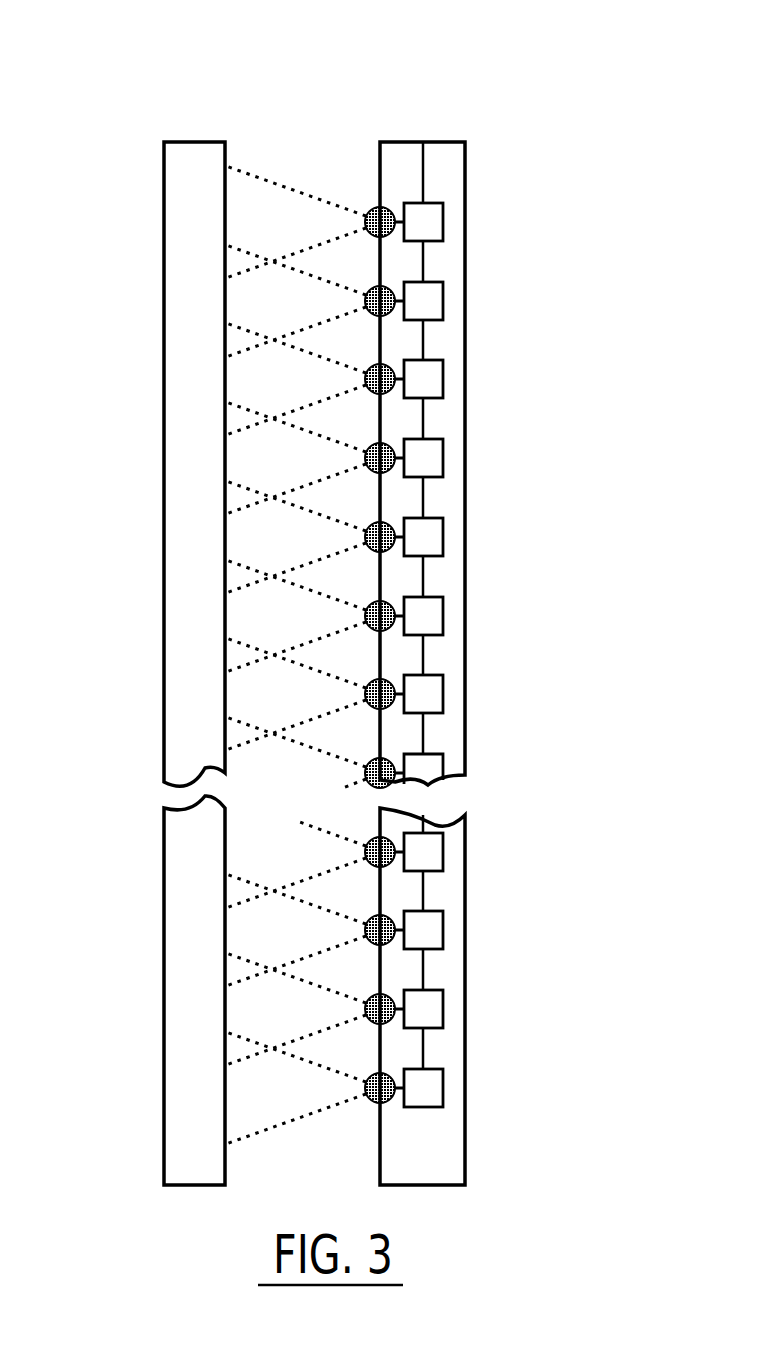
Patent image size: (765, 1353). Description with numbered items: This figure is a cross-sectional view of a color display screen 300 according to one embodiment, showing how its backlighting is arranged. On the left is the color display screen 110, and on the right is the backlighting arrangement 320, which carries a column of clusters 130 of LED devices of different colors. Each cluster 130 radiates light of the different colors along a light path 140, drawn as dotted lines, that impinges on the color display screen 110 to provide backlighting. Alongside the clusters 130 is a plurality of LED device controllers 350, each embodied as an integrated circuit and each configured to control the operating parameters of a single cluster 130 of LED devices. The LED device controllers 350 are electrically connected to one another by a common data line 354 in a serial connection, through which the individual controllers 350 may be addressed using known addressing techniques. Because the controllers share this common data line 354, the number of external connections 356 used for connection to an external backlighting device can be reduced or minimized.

The color display screen 300 is at (226, 94).
The color display screen 110 is at (164, 228).
The light path 140 is at (243, 164).
The cluster of LED devices 130 is at (370, 210).
The sensor assembly 320 is at (511, 128).
The external connections 356 is at (423, 168).
The common data line 354 is at (425, 335).
The LED device controller 350 is at (432, 302).